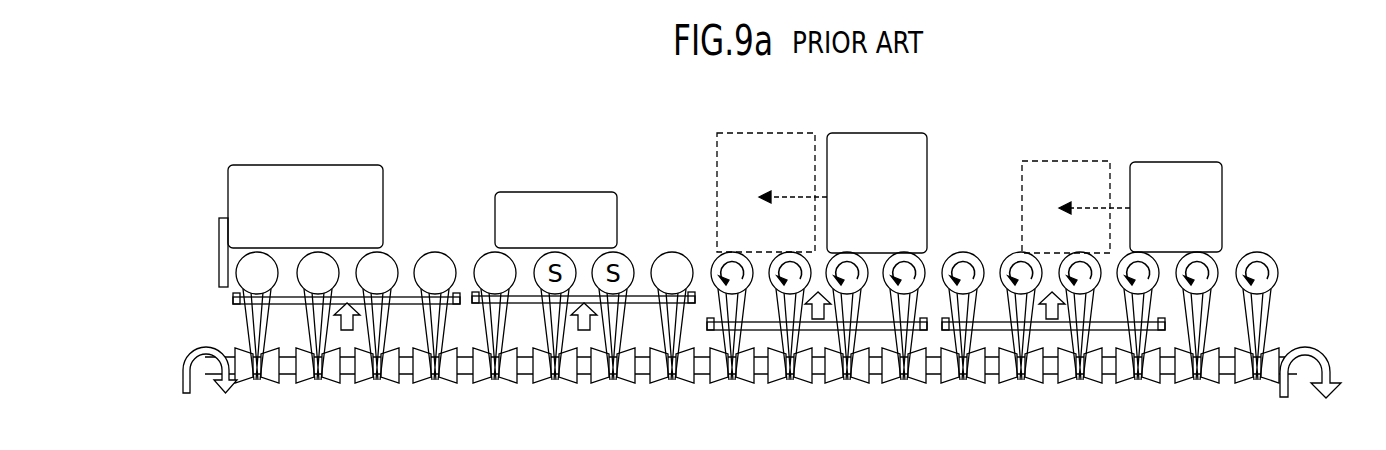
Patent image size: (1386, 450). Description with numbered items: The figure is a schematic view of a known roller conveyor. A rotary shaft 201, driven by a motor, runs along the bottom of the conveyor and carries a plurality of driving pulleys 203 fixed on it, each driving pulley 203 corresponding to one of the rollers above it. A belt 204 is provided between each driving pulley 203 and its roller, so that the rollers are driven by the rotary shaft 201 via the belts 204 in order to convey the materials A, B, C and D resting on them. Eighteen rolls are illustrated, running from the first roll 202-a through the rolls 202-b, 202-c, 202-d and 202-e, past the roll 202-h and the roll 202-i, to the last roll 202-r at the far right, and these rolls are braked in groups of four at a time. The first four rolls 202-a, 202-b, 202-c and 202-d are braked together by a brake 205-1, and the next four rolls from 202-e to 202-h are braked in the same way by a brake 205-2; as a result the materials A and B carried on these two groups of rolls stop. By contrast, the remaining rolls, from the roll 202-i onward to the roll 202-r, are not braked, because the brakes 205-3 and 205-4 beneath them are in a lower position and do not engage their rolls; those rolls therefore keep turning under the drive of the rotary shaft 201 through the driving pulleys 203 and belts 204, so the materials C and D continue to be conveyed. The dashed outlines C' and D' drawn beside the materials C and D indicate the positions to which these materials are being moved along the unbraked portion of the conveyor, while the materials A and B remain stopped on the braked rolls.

The rotary shaft 201 is at (403, 375).
The roll 202-a is at (237, 272).
The roll 202-b is at (313, 254).
The roll 202-c is at (378, 254).
The roll 202-d is at (434, 252).
The roll 202-e is at (516, 280).
The roll 202-h is at (671, 252).
The roll 202-i is at (733, 254).
The roll 202-r is at (1266, 252).
The driving pulley 203 is at (858, 370).
The belt 204 is at (244, 318).
The brake 205-1 is at (285, 305).
The brake 205-2 is at (638, 304).
The brake 205-3 is at (758, 331).
The brake 205-4 is at (990, 331).
The material A is at (253, 172).
The material B is at (558, 200).
The material C is at (877, 168).
The material C' is at (772, 167).
The material D is at (1176, 182).
The material D' is at (1076, 183).